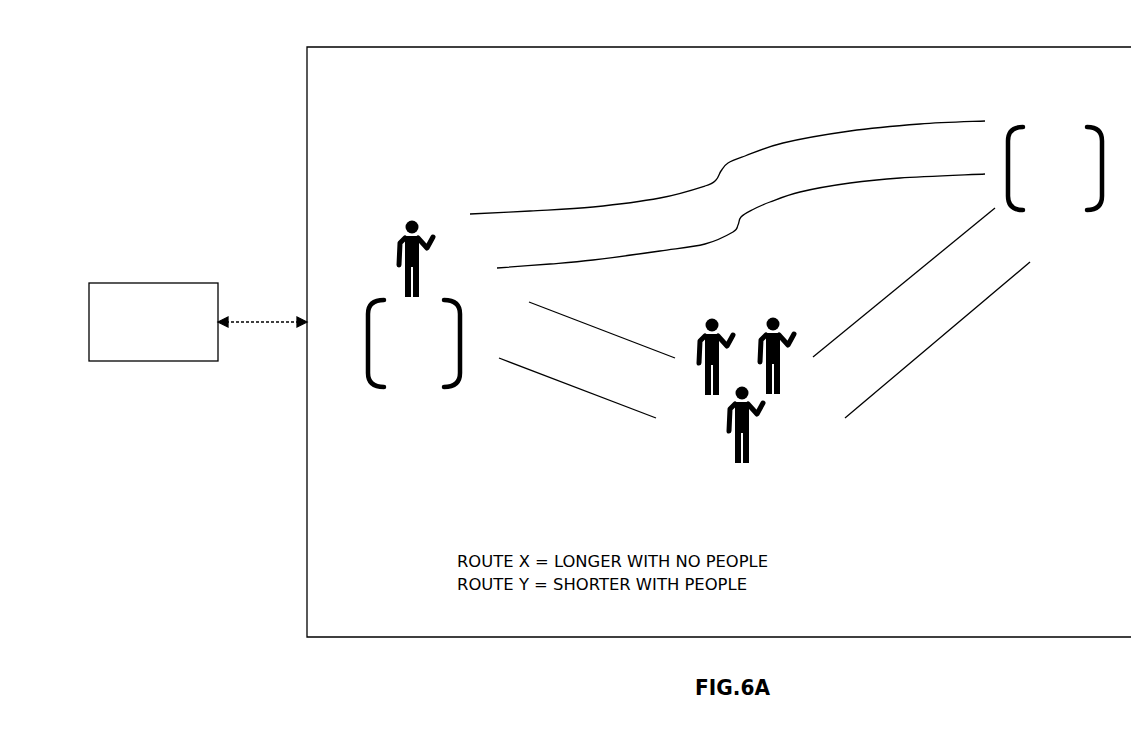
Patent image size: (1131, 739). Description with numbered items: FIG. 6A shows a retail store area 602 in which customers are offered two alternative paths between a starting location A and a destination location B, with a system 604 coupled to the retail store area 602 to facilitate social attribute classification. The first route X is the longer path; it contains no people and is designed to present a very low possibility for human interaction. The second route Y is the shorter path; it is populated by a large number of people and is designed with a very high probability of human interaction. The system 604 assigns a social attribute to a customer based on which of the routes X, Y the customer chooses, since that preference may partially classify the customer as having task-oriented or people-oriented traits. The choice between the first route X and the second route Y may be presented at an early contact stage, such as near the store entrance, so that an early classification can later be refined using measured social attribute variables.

The retail store area 602 is at (719, 342).
The system 604 is at (128, 283).
The start location A is at (414, 304).
The destination location B is at (1055, 168).
The first route x X is at (727, 194).
The second route y Y is at (764, 335).